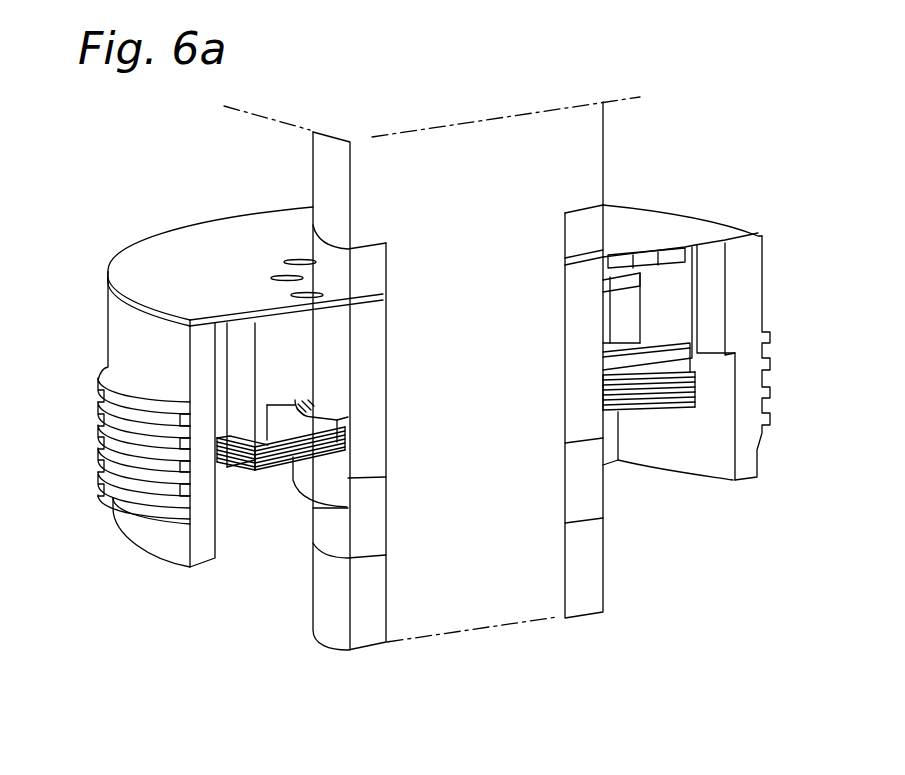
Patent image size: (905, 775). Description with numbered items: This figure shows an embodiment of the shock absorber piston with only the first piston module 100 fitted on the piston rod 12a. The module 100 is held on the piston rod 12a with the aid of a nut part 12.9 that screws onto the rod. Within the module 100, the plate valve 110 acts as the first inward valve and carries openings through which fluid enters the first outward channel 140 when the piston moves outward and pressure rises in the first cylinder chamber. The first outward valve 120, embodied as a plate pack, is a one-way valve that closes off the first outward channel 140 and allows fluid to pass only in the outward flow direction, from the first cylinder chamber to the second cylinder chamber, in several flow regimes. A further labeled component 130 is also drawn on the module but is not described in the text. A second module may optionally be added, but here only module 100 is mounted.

The plate valve 110 is at (168, 262).
The first outward valve 120 is at (227, 450).
The sleeve 130 is at (233, 348).
The first outward channel 140 is at (327, 378).
The first piston module 100 is at (772, 382).
The piston rod 12a is at (577, 165).
The nut part 12.9 is at (365, 605).